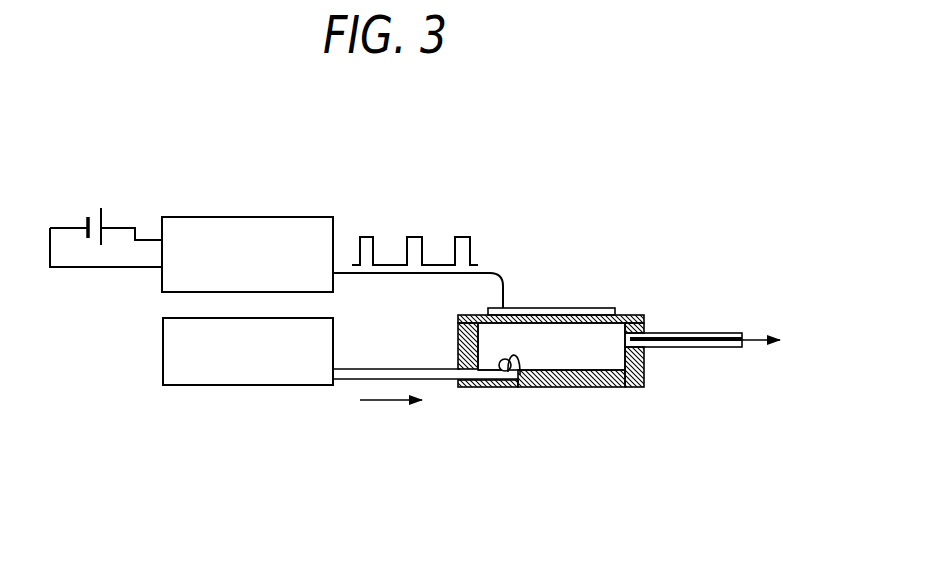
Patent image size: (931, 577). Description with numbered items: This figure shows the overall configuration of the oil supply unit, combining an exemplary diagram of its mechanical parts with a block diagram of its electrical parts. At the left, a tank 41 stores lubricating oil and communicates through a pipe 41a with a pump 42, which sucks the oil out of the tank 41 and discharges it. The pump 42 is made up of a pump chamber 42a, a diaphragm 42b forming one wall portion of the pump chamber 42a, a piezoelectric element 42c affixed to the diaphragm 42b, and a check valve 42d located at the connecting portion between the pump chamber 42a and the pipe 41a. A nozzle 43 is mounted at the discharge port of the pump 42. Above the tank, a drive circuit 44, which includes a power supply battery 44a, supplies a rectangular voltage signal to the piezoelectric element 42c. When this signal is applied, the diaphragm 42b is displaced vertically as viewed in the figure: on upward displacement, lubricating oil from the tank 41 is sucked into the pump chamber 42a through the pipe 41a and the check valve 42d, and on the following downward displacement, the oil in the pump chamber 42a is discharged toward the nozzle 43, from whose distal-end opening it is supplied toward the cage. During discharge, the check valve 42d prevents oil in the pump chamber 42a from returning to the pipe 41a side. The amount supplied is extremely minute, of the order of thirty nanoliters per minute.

The tank 41 is at (222, 387).
The pipe 41a is at (358, 377).
The pump 42 is at (580, 334).
The pump chamber 42a is at (588, 345).
The diaphragm 42b is at (620, 312).
The piezoelectric element 42c is at (530, 316).
The check valve 42d is at (520, 375).
The nozzle 43 is at (685, 343).
The drive circuit 44 is at (283, 225).
The power supply battery 44a is at (87, 226).